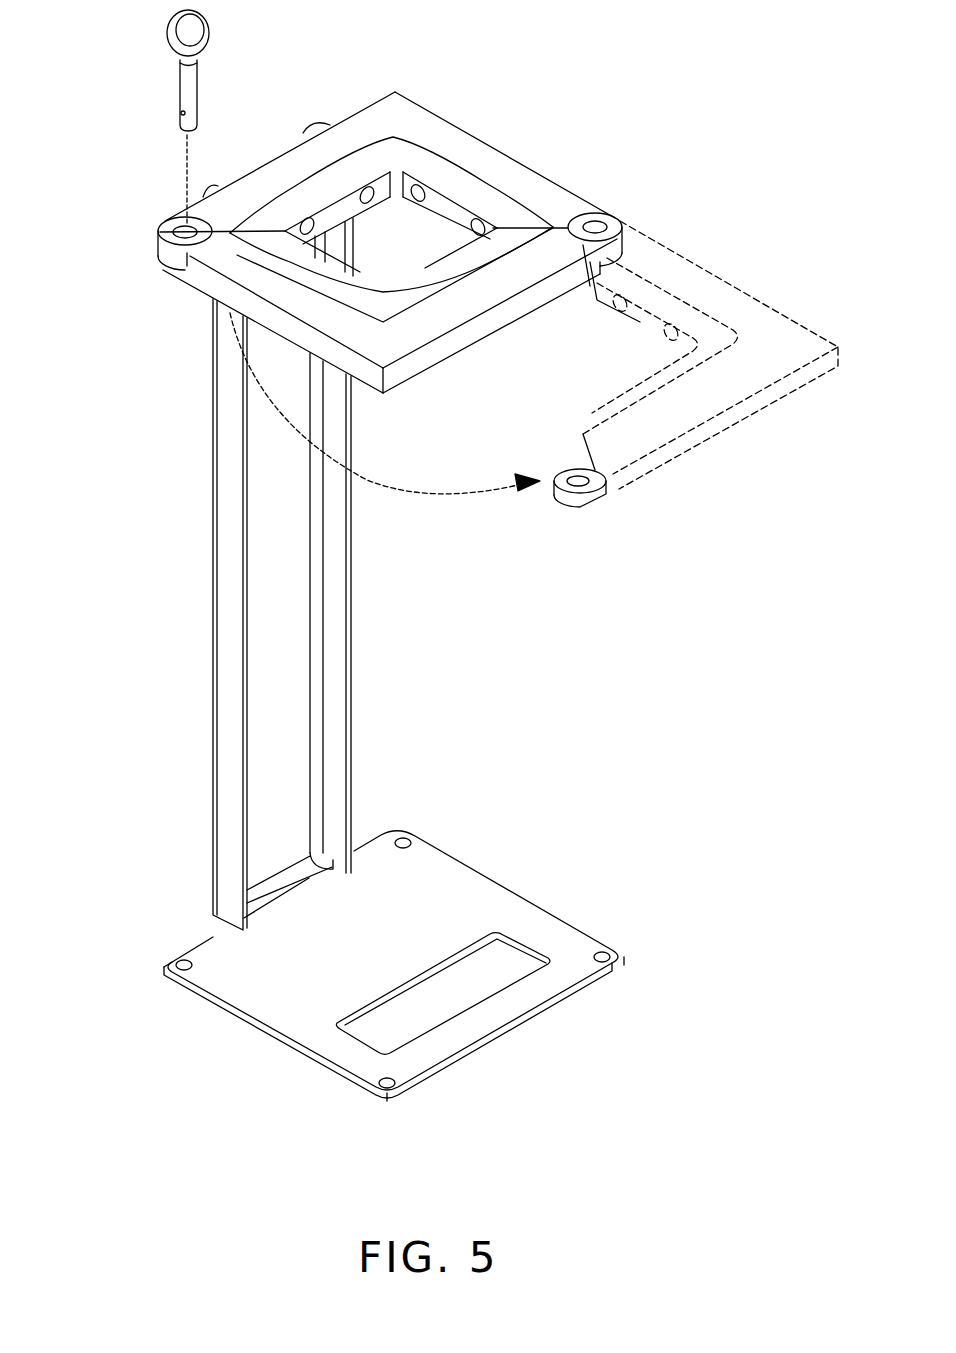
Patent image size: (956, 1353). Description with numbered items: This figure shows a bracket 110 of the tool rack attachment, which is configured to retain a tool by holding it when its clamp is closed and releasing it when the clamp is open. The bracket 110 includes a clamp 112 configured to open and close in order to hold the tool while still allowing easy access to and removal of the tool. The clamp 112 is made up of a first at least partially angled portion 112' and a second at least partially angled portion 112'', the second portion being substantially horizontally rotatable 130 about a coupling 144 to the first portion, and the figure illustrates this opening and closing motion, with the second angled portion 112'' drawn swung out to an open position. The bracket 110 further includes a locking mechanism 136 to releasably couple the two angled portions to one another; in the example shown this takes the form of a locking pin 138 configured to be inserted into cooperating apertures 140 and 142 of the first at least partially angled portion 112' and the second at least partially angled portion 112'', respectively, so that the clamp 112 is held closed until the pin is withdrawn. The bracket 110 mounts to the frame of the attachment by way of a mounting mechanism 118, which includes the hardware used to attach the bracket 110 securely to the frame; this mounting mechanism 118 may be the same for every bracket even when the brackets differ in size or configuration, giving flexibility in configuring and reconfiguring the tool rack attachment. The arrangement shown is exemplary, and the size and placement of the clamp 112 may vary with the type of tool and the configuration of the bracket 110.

The bracket 110 is at (230, 627).
The clamp 112 is at (422, 242).
The first at least partially angled portion 112' is at (370, 198).
The second at least partially angled portion 112'' is at (500, 355).
The mounting mechanism 118 is at (628, 956).
The substantially horizontal rotation 130 is at (387, 490).
The locking mechanism 136 is at (116, 199).
The locking pin 138 is at (193, 97).
The aperture 140 is at (165, 231).
The aperture 142 is at (578, 484).
The coupling 144 is at (597, 213).